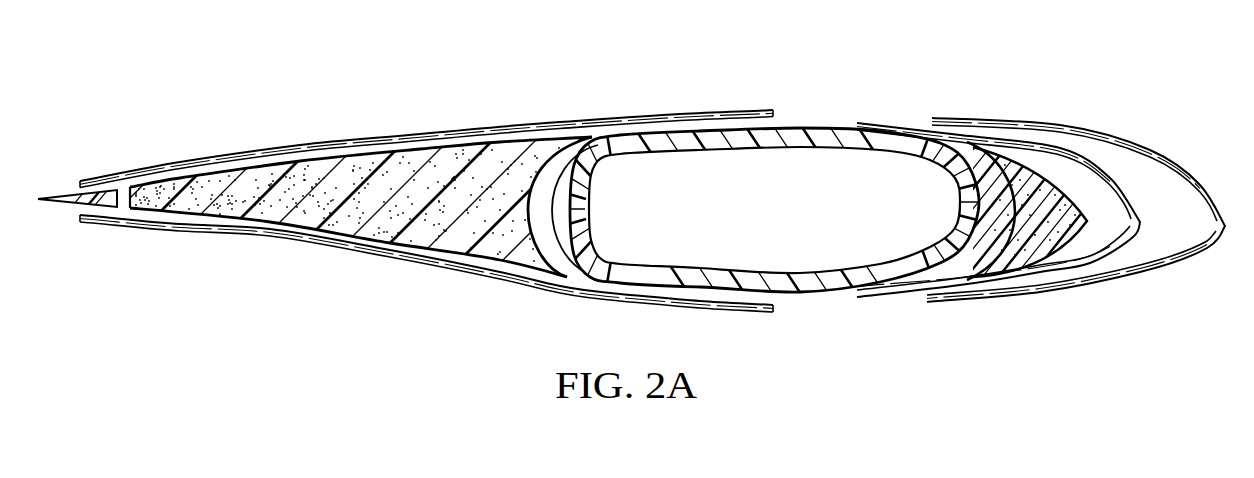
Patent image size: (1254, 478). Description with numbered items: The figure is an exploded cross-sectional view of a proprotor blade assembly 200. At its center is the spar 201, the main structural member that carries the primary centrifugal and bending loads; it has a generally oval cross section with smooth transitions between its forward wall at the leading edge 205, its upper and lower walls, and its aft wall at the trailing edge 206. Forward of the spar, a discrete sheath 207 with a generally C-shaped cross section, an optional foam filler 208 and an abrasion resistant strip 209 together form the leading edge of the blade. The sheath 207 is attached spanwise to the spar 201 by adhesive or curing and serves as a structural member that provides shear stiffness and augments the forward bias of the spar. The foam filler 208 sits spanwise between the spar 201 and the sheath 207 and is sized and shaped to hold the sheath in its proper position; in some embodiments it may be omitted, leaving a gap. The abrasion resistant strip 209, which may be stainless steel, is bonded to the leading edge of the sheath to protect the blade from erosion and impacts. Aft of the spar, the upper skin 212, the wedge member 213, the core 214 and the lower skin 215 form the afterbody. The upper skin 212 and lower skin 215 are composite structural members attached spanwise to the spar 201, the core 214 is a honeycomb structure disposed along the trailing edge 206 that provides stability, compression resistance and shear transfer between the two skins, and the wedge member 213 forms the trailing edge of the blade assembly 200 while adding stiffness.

The proprotor blade assembly 200 is at (344, 91).
The spar 201 is at (810, 292).
The leading edge 205 is at (967, 142).
The trailing edge 206 is at (537, 172).
The sheath 207 is at (1053, 294).
The foam filler 208 is at (997, 280).
The abrasion resistant strip 209 is at (1123, 288).
The upper skin 212 is at (462, 130).
The wedge member 213 is at (62, 197).
The core 214 is at (303, 235).
The lower skin 215 is at (412, 260).